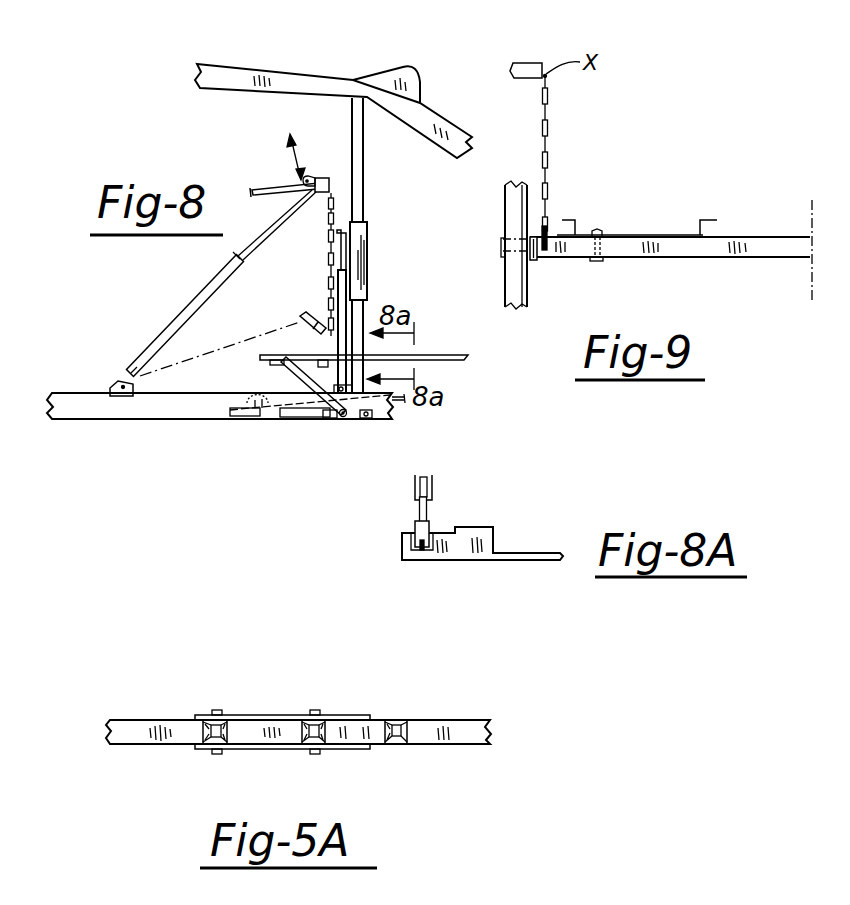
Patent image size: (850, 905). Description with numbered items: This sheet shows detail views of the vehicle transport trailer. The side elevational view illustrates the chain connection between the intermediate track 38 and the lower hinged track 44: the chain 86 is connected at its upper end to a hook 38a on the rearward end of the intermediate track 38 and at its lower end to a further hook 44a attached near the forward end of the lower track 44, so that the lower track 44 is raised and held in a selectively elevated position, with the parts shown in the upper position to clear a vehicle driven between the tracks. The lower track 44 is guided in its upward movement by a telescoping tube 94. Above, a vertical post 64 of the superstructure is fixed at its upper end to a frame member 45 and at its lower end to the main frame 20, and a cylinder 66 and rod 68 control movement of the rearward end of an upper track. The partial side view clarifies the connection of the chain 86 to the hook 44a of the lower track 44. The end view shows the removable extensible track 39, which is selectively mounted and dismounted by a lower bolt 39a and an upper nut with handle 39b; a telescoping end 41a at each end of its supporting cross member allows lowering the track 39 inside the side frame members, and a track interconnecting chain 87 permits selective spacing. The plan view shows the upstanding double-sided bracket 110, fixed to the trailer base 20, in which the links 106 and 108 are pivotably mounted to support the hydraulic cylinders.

In FIG. 8, the main frame 20 is at (123, 410).
In FIG. 5A, the main frame 20 is at (157, 744).
In FIG. 8, the intermediate track 38 is at (281, 183).
In FIG. 8, the hook 38a is at (333, 192).
In FIG. 9, the vertical post 39 is at (675, 235).
In FIG. 9, the lower bolt 39a is at (603, 259).
In FIG. 9, the upper nut with handle 39b is at (613, 232).
In FIG. 9, the telescoping end 41a is at (534, 258).
In FIG. 8, the lower hinged track 44 is at (247, 398).
In FIG. 8A, the lower hinged track 44 is at (493, 533).
In FIG. 8, the hook 44a is at (322, 362).
In FIG. 8A, the hook 44a is at (438, 553).
In FIG. 8, the frame member 45 is at (316, 38).
In FIG. 5A, the vertical post 64 is at (400, 722).
In FIG. 8, the cylinder 66 is at (342, 290).
In FIG. 8, the rod 68 is at (343, 258).
In FIG. 8, the chain 86 is at (328, 213).
In FIG. 8A, the chain 86 is at (436, 490).
In FIG. 9, the chain 87 is at (548, 165).
In FIG. 8, the telescoping tube 94 is at (322, 408).
In FIG. 5A, the link 106 is at (229, 727).
In FIG. 5A, the link 108 is at (321, 731).
In FIG. 5A, the upstanding double-sided bracket 110 is at (281, 750).